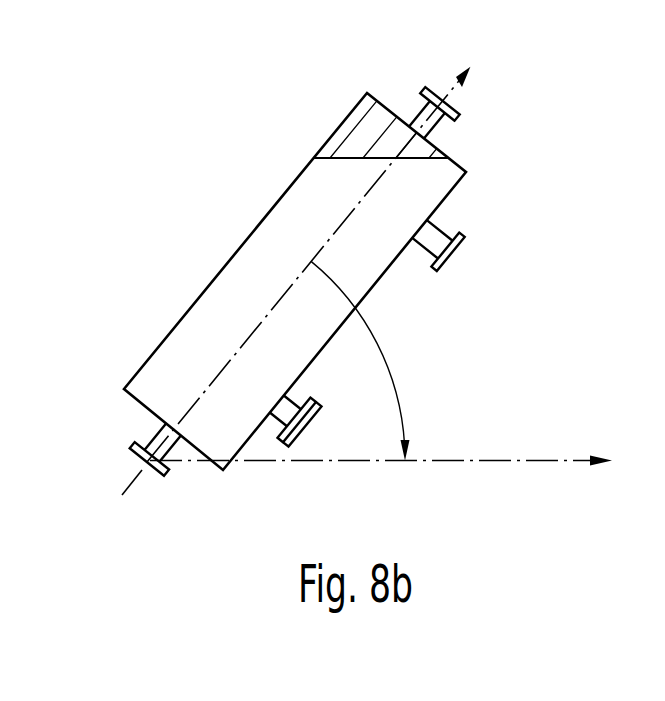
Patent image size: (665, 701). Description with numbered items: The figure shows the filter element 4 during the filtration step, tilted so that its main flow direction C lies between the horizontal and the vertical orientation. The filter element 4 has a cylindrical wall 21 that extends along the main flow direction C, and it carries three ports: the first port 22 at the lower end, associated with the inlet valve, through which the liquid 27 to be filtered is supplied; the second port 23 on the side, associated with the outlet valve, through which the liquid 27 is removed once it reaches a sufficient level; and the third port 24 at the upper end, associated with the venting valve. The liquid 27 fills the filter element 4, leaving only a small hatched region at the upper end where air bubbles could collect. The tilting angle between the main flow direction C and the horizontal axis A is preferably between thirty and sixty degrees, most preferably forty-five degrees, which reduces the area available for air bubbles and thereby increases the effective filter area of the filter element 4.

The filter element 4 is at (287, 267).
The cylindrical wall 21 is at (234, 252).
The first port 22 is at (132, 452).
The second port 23 is at (462, 233).
The third port 24 is at (422, 92).
The liquid 27 is at (212, 307).
The horizontal axis A is at (391, 461).
The main flow direction C is at (475, 61).